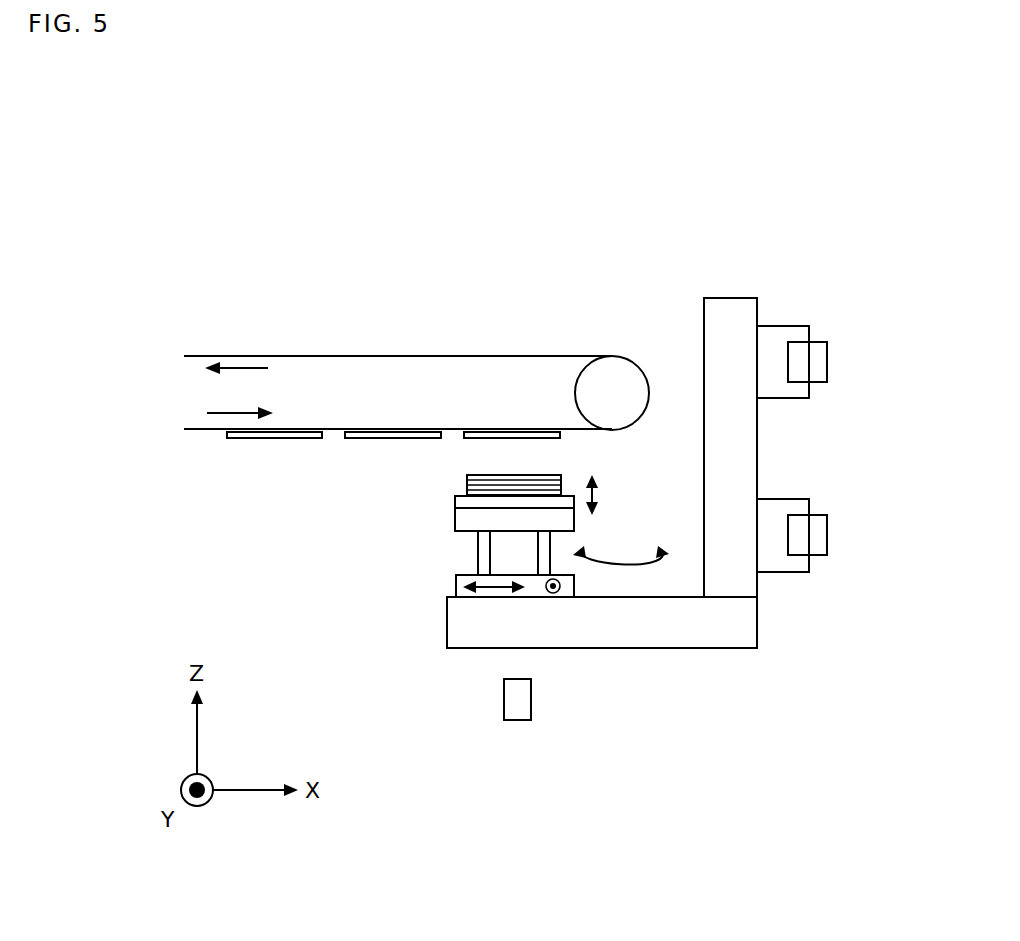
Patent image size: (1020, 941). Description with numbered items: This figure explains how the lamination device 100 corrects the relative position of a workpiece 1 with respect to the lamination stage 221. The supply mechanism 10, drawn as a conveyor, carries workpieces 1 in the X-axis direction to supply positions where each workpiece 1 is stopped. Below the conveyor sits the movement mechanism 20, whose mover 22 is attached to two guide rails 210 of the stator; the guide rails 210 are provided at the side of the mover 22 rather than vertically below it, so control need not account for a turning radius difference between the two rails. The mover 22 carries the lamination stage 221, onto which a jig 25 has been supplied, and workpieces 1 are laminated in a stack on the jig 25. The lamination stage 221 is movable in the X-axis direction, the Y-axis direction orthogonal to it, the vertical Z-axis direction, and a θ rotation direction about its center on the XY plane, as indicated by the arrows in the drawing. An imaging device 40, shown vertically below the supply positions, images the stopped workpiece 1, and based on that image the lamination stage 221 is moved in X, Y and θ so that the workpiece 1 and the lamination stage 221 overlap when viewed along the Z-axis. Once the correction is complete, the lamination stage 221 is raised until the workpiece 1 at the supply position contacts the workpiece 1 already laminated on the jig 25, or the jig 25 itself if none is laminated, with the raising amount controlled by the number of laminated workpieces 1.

The lamination device 100 is at (334, 234).
The supply mechanism 10 is at (330, 357).
The workpiece 1 is at (273, 440).
The jig 25 is at (455, 503).
The lamination stage 221 is at (455, 520).
The mover 22 is at (690, 297).
The movement mechanism 20 is at (814, 258).
The guide rail 210 is at (827, 357).
The imaging device 40 is at (531, 700).